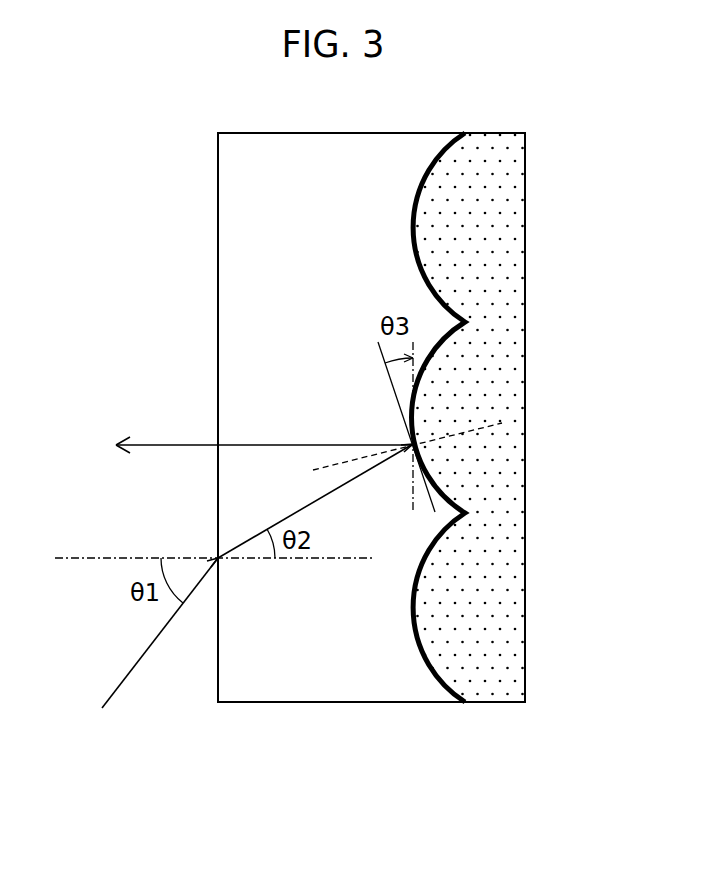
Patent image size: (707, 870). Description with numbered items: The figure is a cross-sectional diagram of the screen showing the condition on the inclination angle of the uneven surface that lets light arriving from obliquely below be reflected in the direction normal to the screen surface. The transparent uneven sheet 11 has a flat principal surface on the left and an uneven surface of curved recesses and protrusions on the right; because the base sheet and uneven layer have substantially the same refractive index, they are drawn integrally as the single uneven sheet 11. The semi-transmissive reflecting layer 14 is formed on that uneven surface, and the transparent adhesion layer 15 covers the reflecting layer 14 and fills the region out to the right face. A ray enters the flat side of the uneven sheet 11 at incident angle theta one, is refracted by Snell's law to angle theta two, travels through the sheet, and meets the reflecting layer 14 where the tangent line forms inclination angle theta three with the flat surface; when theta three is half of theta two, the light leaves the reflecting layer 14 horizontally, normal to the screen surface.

The uneven sheet 11 is at (306, 677).
The semi-transmissive reflecting layer 14 is at (435, 678).
The adhesion layer 15 is at (502, 677).